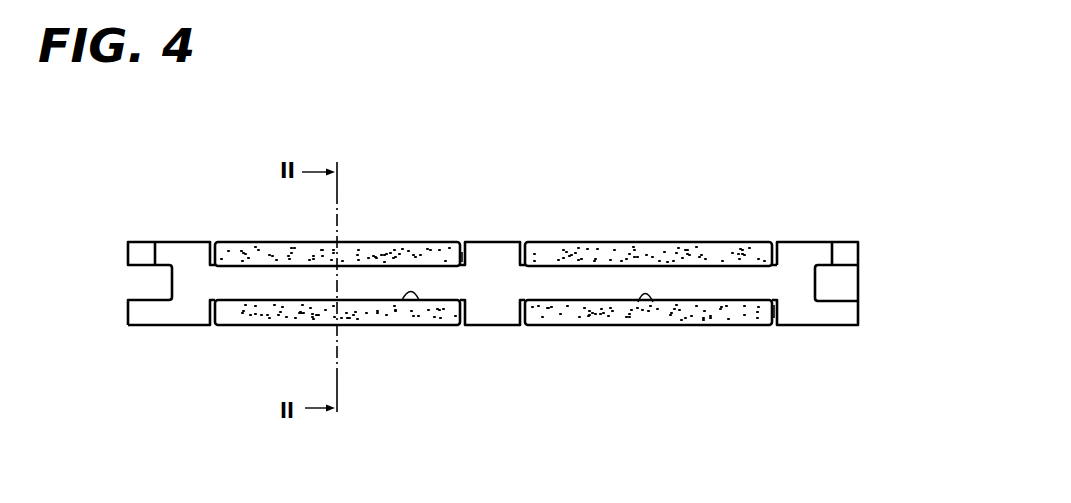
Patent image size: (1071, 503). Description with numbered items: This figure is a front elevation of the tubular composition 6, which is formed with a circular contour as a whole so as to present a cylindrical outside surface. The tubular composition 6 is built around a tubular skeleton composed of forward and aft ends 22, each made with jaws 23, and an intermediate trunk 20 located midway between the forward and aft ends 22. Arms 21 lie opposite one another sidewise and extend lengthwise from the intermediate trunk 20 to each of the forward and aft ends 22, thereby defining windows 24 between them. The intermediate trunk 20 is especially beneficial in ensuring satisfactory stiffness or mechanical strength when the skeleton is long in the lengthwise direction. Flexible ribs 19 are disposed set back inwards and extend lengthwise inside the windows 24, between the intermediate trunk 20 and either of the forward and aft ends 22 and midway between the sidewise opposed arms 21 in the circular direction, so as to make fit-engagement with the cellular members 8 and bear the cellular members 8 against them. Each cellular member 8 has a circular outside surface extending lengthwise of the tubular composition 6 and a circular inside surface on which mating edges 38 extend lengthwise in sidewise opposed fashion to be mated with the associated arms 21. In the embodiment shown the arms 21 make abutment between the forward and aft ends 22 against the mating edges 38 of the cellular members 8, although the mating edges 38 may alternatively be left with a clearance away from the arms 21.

The tubular composition 6 is at (545, 221).
The cellular member 8 is at (390, 250).
The flexible rib 19 is at (464, 262).
The intermediate trunk 20 is at (492, 308).
The arm 21 is at (285, 282).
The forward and aft end 22 is at (185, 250).
The jaw 23 is at (142, 312).
The window 24 is at (243, 262).
The mating edge 38 is at (435, 270).